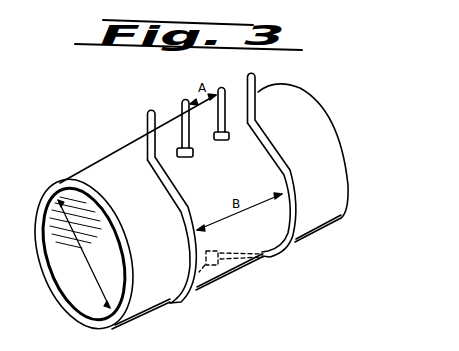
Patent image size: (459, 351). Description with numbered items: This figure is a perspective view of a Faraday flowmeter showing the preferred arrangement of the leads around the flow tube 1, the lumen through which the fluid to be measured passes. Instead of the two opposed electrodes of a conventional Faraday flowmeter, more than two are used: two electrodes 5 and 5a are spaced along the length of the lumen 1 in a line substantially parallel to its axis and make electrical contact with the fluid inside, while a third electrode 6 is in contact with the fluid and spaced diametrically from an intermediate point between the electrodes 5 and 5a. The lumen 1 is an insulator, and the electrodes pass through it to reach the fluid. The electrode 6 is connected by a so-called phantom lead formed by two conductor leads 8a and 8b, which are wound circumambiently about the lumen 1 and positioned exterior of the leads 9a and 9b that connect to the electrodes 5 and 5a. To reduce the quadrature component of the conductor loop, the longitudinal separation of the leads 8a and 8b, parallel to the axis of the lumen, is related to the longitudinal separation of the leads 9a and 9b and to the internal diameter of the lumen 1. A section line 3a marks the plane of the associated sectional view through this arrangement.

The flow tube 1 is at (104, 314).
The section line 3a- 3a is at (33, 163).
The electrode 5 is at (187, 157).
The electrode 5a is at (222, 140).
The electrode 6 is at (216, 251).
The conductor lead 8a is at (286, 186).
The conductor lead 8b is at (186, 222).
The lead 9a is at (181, 108).
The lead 9b is at (224, 93).